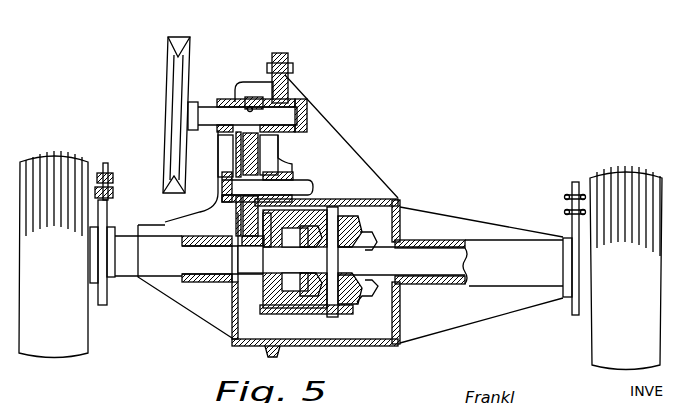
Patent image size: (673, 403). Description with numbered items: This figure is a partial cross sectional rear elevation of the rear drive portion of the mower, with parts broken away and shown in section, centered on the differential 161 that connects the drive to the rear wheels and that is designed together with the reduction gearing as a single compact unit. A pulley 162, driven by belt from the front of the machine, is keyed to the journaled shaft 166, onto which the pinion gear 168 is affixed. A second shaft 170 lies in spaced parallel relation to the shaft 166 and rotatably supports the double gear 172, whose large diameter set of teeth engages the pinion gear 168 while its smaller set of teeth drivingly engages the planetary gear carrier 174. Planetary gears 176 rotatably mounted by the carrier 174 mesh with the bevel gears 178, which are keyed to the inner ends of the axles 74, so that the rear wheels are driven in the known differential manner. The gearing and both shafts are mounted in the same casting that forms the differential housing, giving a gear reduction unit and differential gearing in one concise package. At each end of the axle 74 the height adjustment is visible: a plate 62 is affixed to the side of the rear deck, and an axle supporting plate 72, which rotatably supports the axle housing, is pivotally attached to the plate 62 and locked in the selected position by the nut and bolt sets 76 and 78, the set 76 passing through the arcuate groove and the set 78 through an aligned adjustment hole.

The plate 62 is at (112, 220).
The axle supporting plate 72 is at (98, 300).
The axle 74 is at (442, 270).
The nut and bolt set 76 is at (114, 192).
The nut and bolt set 78 is at (113, 178).
The differential 161 is at (398, 192).
The pulley 162 is at (166, 60).
The journaled shaft 166 is at (206, 106).
The pinion gear 168 is at (257, 92).
The shaft 170 is at (304, 186).
The double gear 172 is at (288, 174).
The planetary gear carrier 174 is at (290, 305).
The planetary gear 176 is at (352, 310).
The bevel gear 178 is at (358, 294).